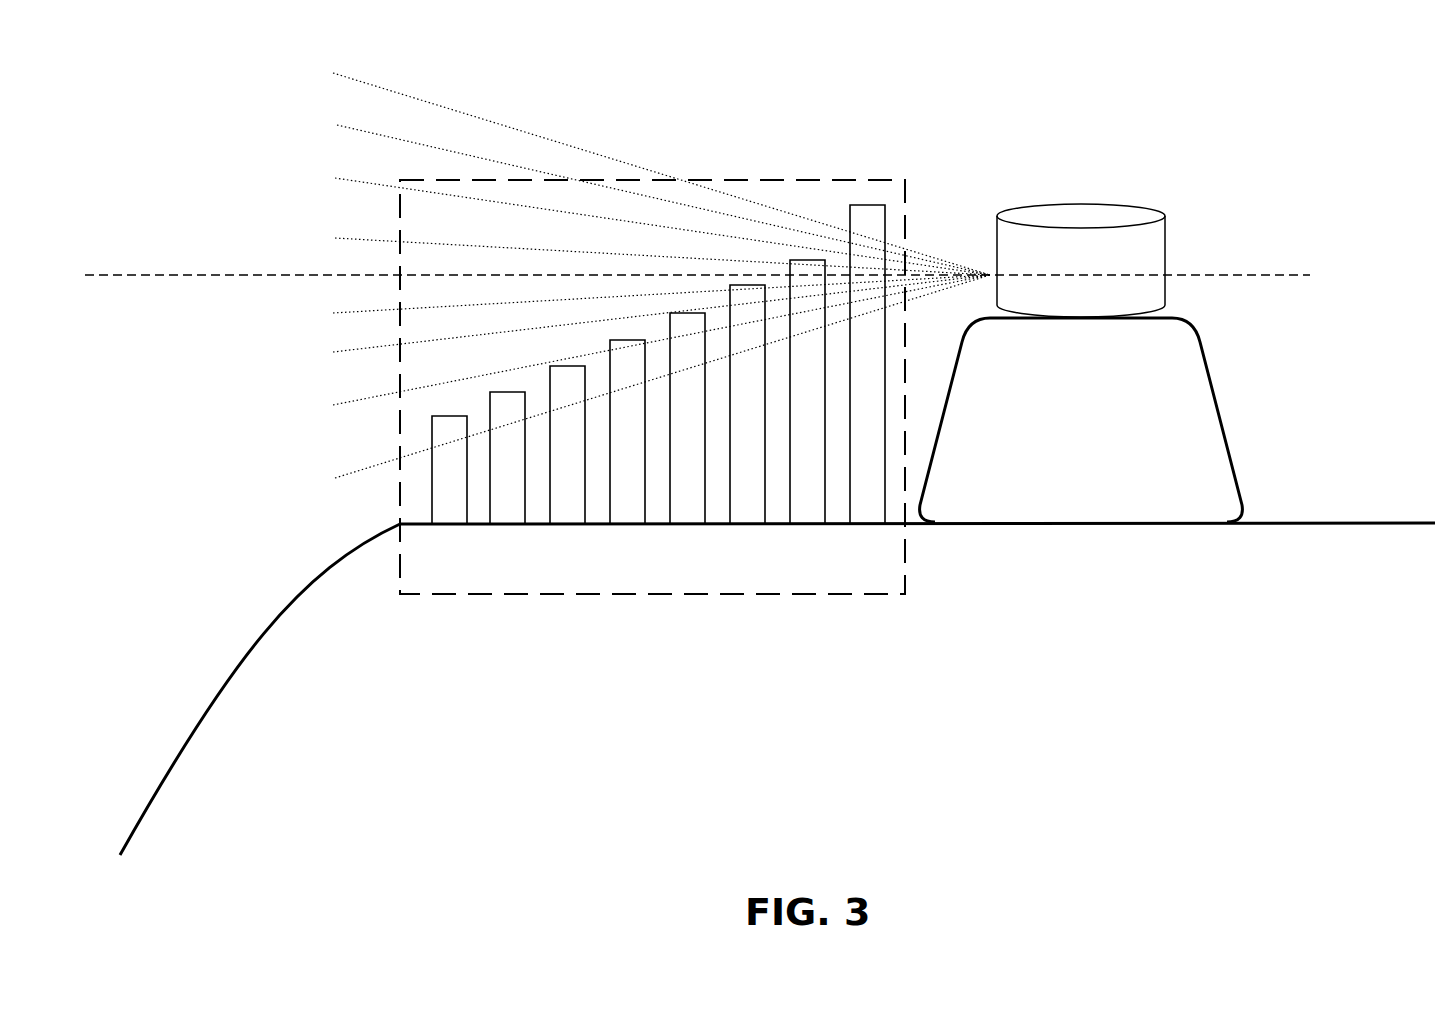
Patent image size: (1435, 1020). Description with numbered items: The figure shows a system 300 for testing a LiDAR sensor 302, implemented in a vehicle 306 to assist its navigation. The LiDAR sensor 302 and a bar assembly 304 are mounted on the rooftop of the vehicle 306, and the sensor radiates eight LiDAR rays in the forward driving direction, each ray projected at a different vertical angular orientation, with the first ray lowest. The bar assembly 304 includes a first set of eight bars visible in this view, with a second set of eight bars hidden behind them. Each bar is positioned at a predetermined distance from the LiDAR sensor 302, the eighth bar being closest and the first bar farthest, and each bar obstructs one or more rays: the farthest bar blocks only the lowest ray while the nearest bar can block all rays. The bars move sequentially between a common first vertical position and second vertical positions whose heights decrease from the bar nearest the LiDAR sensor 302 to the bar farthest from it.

The system 300 is at (1012, 47).
The LiDAR sensor 302 is at (1165, 237).
The bar assembly 304 is at (780, 179).
The vehicle 306 is at (1336, 523).